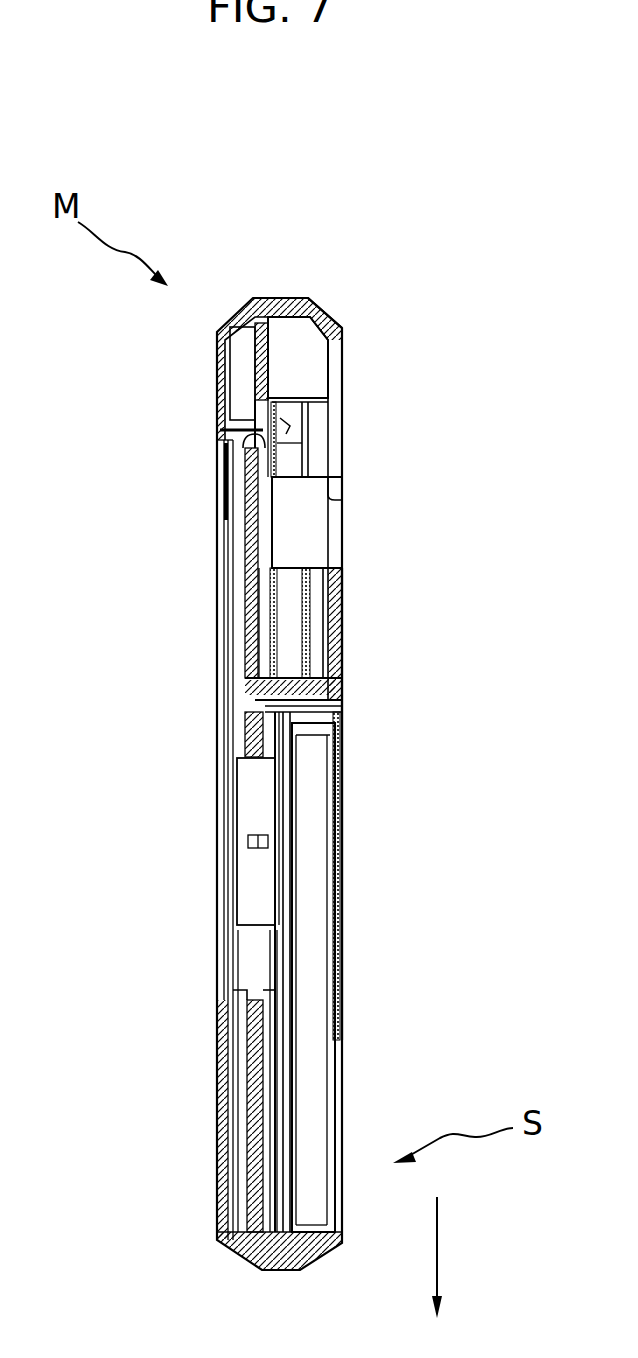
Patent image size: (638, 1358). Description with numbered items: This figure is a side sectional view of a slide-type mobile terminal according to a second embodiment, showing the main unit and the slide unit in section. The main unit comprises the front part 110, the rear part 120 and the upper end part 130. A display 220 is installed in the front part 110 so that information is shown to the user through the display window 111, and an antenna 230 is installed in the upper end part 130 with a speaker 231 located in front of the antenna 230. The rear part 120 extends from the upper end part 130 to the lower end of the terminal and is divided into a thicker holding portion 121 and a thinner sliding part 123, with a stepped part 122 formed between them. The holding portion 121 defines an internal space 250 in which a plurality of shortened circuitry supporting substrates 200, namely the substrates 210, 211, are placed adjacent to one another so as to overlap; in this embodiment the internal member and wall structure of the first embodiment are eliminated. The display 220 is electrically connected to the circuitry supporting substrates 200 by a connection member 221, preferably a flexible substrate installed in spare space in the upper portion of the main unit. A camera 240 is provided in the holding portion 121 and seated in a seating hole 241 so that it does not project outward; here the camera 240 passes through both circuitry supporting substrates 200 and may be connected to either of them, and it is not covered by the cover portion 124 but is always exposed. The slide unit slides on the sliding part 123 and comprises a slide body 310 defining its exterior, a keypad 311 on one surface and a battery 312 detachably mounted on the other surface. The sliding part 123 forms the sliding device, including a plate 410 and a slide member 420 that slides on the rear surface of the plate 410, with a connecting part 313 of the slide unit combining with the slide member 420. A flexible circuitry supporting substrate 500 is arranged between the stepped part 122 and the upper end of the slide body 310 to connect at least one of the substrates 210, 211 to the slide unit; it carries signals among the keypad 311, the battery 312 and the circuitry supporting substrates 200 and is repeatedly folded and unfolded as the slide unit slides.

The front part 110 is at (217, 390).
The display window 111 is at (218, 547).
The rear part 120 is at (460, 662).
The holding portion 121 is at (338, 660).
The stepped part 122 is at (330, 708).
The sliding part 123 is at (292, 807).
The cover portion 124 is at (341, 826).
The upper end part 130 is at (300, 302).
The circuitry supporting substrates 200 is at (452, 575).
The circuitry supporting substrate 210 is at (273, 597).
The circuitry supporting substrate 211 is at (306, 630).
The display 220 is at (236, 668).
The connection member 221 is at (308, 453).
The antenna 230 is at (323, 362).
The speaker 231 is at (243, 345).
The camera 240 is at (332, 537).
The seating hole 241 is at (336, 494).
The space 250 is at (292, 428).
The slide body 310 is at (338, 878).
The keypad 311 is at (286, 1092).
The battery 312 is at (318, 983).
The connecting part 313 is at (284, 898).
The plate 410 is at (256, 1052).
The slide member 420 is at (256, 878).
The flexible circuitry supporting substrate 500 is at (270, 715).